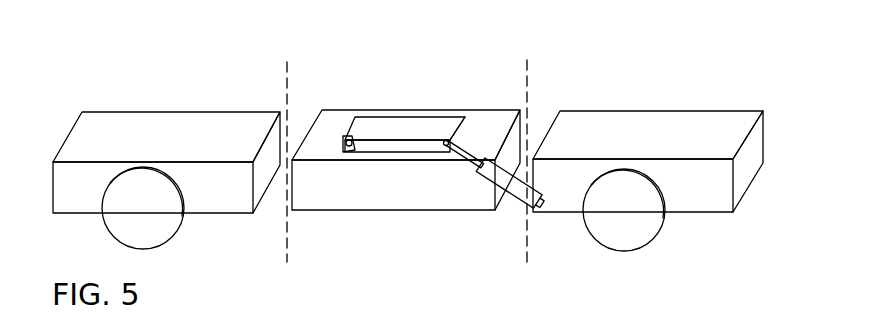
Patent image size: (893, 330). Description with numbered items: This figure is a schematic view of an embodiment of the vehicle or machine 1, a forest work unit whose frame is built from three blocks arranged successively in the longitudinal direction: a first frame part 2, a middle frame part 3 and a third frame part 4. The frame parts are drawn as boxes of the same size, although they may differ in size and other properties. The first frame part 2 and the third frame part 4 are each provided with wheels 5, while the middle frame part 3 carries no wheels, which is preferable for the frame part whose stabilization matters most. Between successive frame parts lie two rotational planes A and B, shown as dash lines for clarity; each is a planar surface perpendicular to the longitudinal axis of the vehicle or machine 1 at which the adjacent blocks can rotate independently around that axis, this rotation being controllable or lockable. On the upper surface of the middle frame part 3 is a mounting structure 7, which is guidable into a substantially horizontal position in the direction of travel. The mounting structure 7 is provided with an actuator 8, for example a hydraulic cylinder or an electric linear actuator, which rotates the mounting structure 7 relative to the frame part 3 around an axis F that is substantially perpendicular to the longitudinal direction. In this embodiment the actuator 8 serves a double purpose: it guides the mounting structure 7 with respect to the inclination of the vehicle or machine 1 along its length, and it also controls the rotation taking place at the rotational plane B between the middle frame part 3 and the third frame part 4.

The vehicle or machine 1 is at (118, 90).
The first frame part 2 is at (145, 128).
The frame part 3 is at (483, 127).
The third frame part 4 is at (648, 124).
The wheels 5 is at (141, 215).
The mounting structure 7 is at (405, 128).
The actuator 8 is at (518, 188).
The rotational plane A is at (287, 147).
The rotational plane B is at (529, 149).
The axis F is at (374, 101).